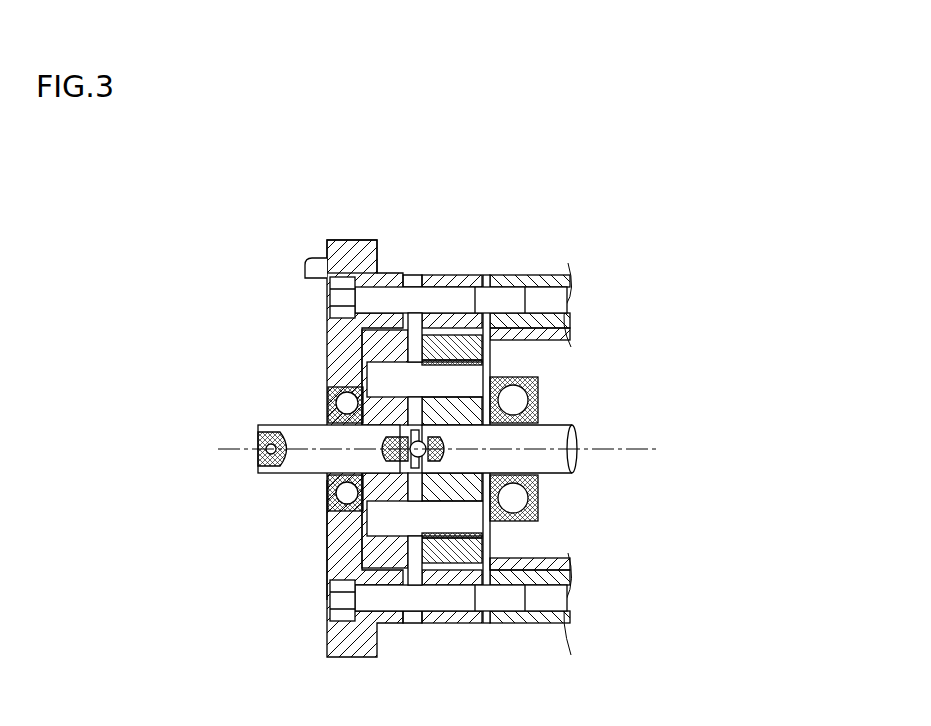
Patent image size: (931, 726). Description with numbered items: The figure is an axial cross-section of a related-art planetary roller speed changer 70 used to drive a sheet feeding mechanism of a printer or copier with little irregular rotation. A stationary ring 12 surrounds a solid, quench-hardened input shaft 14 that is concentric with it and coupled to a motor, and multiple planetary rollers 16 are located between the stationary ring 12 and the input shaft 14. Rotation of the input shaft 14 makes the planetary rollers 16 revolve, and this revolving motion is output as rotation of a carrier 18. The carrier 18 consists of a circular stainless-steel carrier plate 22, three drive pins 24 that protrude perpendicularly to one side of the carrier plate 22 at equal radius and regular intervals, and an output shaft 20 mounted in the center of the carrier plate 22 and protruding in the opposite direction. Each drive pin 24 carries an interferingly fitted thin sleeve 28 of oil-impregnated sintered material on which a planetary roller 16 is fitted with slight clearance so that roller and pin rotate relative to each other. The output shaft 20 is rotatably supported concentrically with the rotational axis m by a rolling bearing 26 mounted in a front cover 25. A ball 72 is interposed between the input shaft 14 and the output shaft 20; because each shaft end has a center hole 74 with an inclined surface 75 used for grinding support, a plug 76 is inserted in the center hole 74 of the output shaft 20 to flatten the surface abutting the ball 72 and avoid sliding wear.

The planetary roller speed changer 70 is at (665, 217).
The stationary ring 12 is at (447, 272).
The input shaft 14 is at (556, 426).
The planetary rollers 16 is at (513, 365).
The carrier 18 is at (360, 345).
The output shaft 20 is at (264, 424).
The carrier plate 22 is at (392, 560).
The drive pins 24 is at (440, 365).
The front cover 25 is at (353, 242).
The rolling bearing 26 is at (314, 516).
The sleeve 28 is at (488, 548).
The ball 72 is at (440, 456).
The center hole 74 is at (338, 405).
The inclined surface 75 is at (545, 478).
The plug 76 is at (412, 465).
The rotational axis m is at (648, 452).